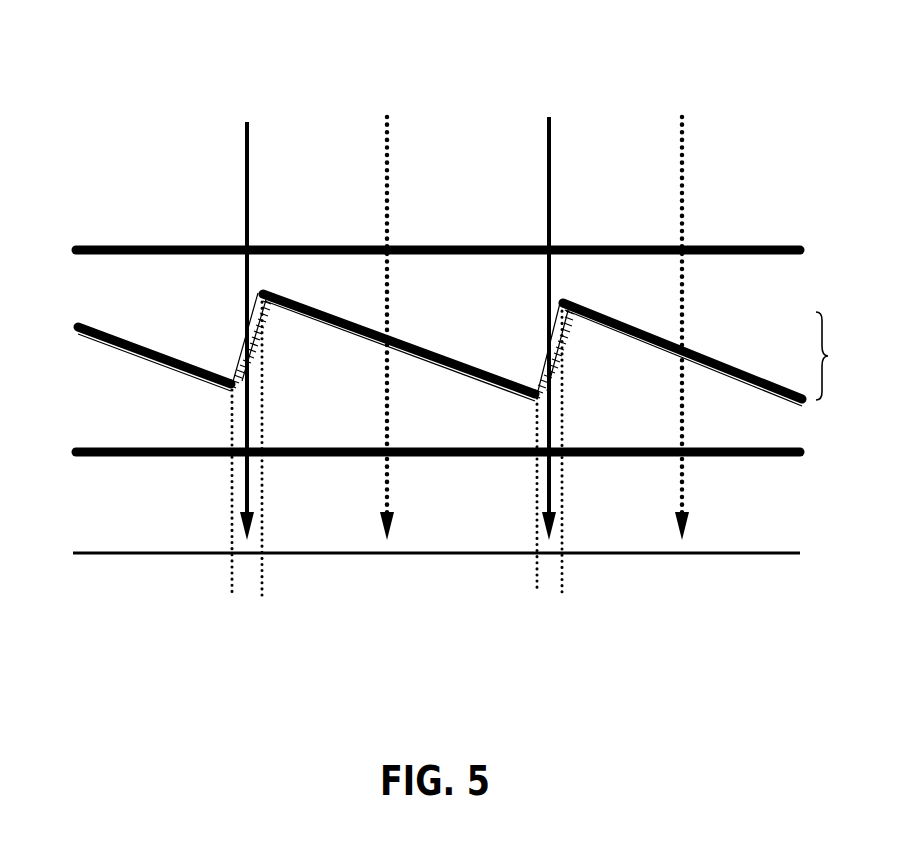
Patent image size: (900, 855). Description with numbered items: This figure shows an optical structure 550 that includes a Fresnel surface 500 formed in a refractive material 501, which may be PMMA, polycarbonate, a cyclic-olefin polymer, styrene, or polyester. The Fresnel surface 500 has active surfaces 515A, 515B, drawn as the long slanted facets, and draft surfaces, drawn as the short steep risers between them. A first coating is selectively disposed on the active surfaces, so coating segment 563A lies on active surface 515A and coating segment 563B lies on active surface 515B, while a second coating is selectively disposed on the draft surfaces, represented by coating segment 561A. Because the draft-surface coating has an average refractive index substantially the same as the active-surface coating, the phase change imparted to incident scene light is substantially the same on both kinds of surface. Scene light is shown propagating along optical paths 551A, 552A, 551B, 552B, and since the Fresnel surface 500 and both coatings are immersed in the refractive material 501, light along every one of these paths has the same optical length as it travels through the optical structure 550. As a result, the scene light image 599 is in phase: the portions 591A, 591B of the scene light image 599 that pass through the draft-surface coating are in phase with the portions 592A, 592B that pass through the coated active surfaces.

The optical structure 550 is at (791, 35).
The Fresnel surface 500 is at (845, 356).
The refractive material 501 is at (439, 336).
The active surface 515A is at (477, 410).
The active surface 515B is at (728, 400).
The optical path of scene light 551A is at (247, 148).
The optical path of scene light 551B is at (549, 158).
The optical path of scene light 552A is at (387, 148).
The optical path of scene light 552B is at (682, 148).
The coating segment 561A is at (228, 322).
The coating segment 563A is at (412, 318).
The coating segment 563B is at (714, 330).
The portion of scene light image 591A is at (246, 580).
The portion of scene light image 591B is at (548, 582).
The portion of scene light image 592A is at (280, 577).
The portion of scene light image 592B is at (582, 578).
The scene light image 599 is at (437, 554).